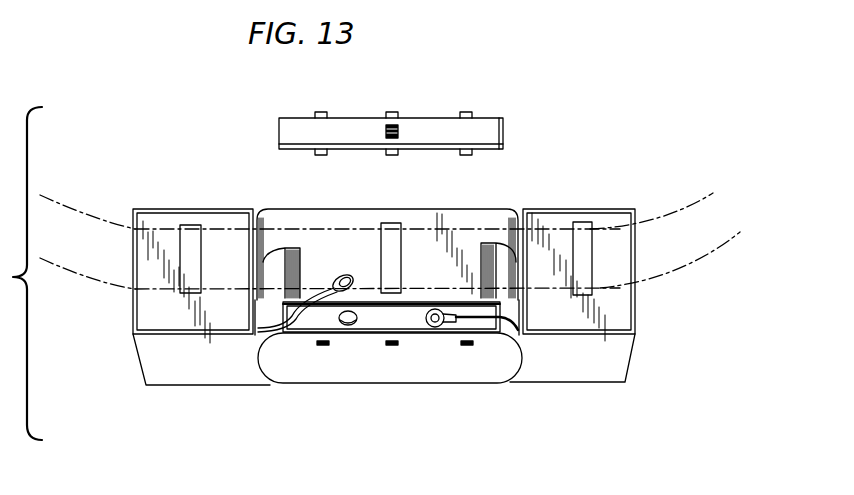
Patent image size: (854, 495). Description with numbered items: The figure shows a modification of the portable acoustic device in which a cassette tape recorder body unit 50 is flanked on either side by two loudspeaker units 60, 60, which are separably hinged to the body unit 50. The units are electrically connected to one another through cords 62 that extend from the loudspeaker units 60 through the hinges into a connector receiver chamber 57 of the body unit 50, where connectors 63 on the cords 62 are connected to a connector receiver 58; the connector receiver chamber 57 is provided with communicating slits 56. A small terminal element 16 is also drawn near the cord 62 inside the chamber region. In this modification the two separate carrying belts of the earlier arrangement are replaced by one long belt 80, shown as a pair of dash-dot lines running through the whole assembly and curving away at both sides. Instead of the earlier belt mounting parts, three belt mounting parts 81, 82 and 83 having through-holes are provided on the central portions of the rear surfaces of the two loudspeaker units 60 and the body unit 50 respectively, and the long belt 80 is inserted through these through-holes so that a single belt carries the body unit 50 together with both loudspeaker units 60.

The terminal clip 16 is at (344, 276).
The body unit 50 is at (392, 367).
The communicating slits 56 is at (418, 116).
The connector receiver chamber 57 is at (373, 322).
The connector receiver 58 is at (348, 327).
The loudspeaker units 60 is at (211, 370).
The cords 62 is at (298, 317).
The connectors 63 is at (435, 327).
The long belt 80 is at (85, 217).
The belt mounting part 81 is at (190, 225).
The belt mounting part 82 is at (592, 258).
The belt mounting part 83 is at (402, 255).